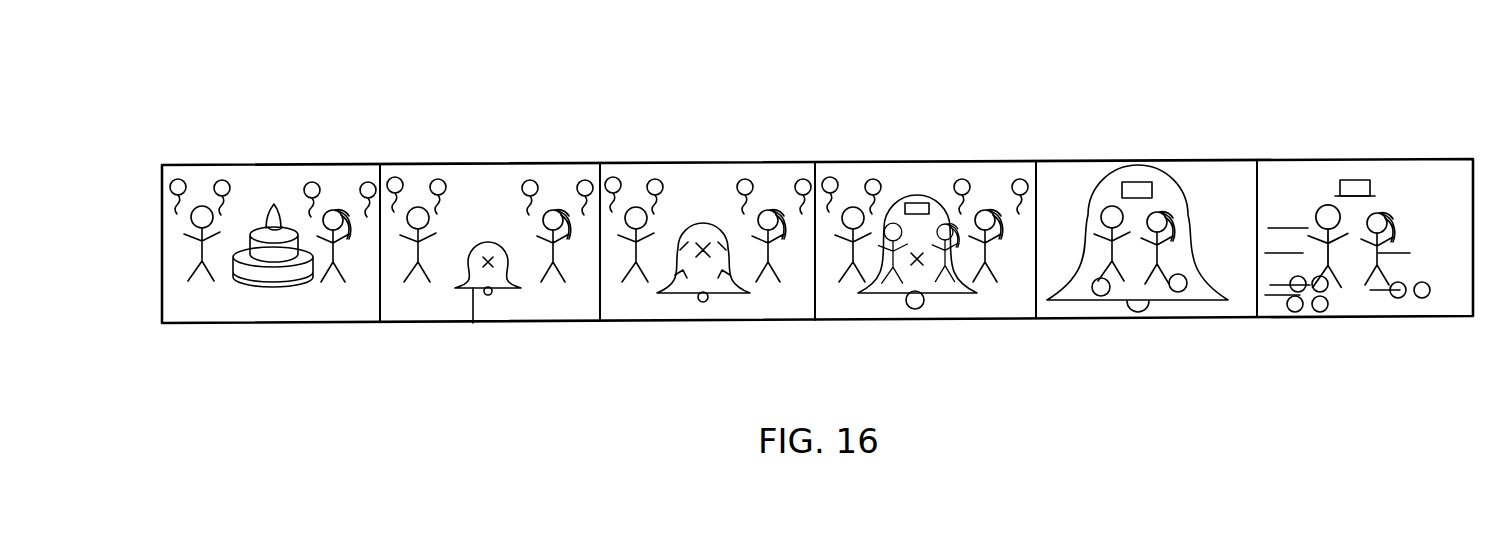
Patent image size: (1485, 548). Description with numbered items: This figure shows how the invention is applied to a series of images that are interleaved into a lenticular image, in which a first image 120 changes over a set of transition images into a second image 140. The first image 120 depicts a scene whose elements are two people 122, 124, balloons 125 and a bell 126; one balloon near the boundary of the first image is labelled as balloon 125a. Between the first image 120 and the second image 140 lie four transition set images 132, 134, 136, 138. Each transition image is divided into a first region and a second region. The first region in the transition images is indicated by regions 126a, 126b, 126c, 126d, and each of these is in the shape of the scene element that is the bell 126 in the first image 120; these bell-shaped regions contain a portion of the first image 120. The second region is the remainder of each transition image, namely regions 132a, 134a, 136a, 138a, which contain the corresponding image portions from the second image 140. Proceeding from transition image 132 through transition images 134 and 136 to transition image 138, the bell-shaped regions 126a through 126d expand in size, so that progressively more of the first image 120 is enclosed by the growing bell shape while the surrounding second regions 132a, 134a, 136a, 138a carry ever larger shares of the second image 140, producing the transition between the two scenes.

The first image 120 is at (293, 323).
The people 122 is at (201, 205).
The people 124 is at (337, 209).
The balloons 125 is at (176, 177).
The balloon 125a is at (378, 165).
The bell 126 is at (270, 204).
The first region 126a is at (473, 323).
The first region 126b is at (695, 222).
The first region 126c is at (922, 198).
The first region 126d is at (1145, 172).
The transition set image 132 is at (575, 325).
The second region 132a is at (518, 170).
The transition set image 134 is at (782, 322).
The second region 134a is at (717, 168).
The transition set image 136 is at (1010, 322).
The second region 136a is at (860, 170).
The transition set image 138 is at (1180, 320).
The second region 138a is at (1072, 172).
The second image 140 is at (1405, 317).